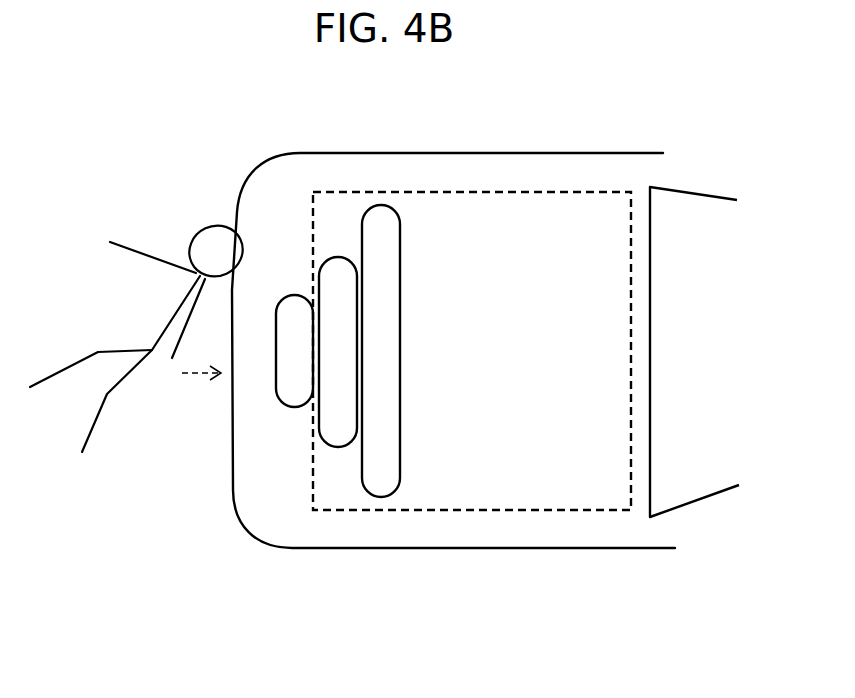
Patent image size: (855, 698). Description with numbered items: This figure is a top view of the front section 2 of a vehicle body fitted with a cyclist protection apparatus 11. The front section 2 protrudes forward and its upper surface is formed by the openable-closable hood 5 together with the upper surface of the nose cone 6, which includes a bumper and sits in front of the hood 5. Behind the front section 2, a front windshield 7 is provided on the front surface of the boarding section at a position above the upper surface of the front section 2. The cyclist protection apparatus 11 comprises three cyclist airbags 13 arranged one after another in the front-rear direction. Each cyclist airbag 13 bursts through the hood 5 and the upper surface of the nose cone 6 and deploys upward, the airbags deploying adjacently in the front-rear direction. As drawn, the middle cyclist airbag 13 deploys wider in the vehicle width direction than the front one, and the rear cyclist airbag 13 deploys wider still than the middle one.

The front section 2 is at (577, 130).
The hood 5 is at (509, 212).
The nose cone 6 is at (287, 168).
The front windshield 7 is at (705, 203).
The cyclist protection apparatus 11 is at (292, 613).
The cyclist airbag 13 is at (302, 387).